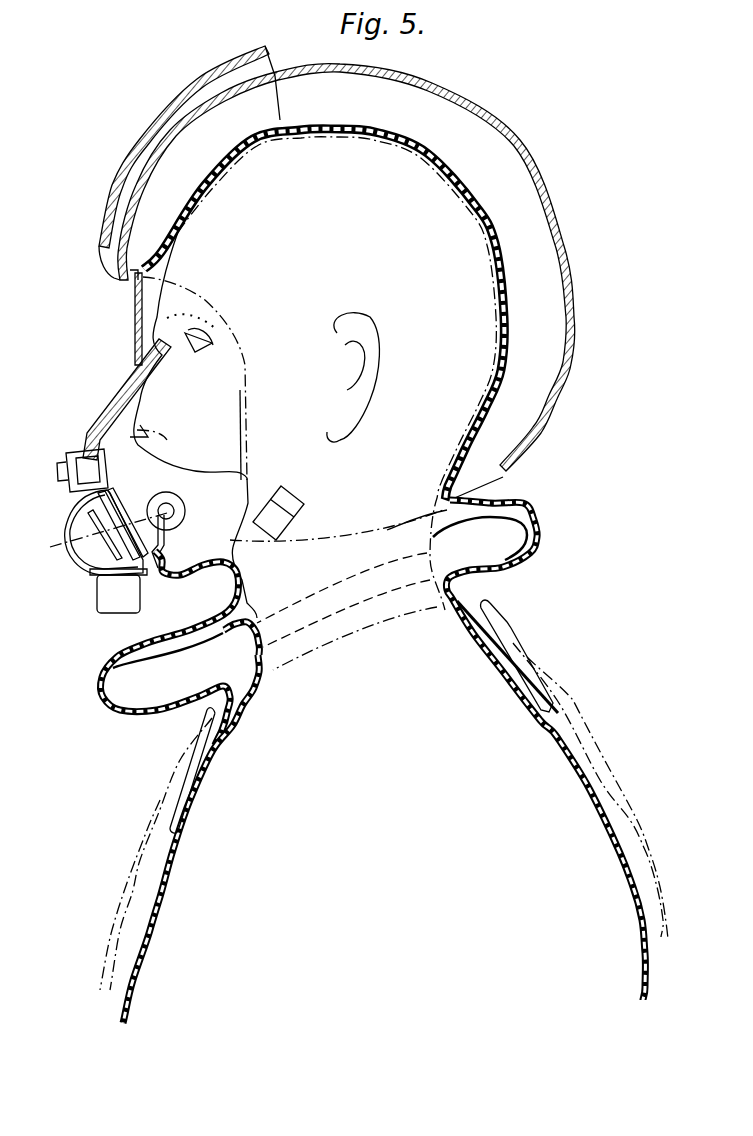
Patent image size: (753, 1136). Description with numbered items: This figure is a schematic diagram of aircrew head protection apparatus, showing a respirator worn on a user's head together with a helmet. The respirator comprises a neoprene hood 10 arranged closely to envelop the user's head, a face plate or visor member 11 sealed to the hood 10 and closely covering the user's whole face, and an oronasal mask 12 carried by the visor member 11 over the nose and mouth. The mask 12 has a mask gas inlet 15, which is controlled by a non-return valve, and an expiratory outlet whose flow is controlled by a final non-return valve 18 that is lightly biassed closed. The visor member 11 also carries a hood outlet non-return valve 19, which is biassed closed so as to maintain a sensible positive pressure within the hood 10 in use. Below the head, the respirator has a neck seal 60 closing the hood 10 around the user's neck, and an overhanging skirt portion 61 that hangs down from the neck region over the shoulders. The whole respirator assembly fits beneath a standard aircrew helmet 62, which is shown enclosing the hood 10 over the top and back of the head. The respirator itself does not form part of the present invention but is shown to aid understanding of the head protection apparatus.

The hood 10 is at (507, 240).
The visor member 11 is at (133, 308).
The oronasal mask 12 is at (66, 513).
The mask gas inlet 15 is at (115, 598).
The final non-return valve 18 is at (82, 452).
The hood outlet non-return valve 19 is at (113, 528).
The neck seal 60 is at (245, 650).
The overhanging skirt portion 61 is at (170, 807).
The aircrew helmet 62 is at (519, 140).